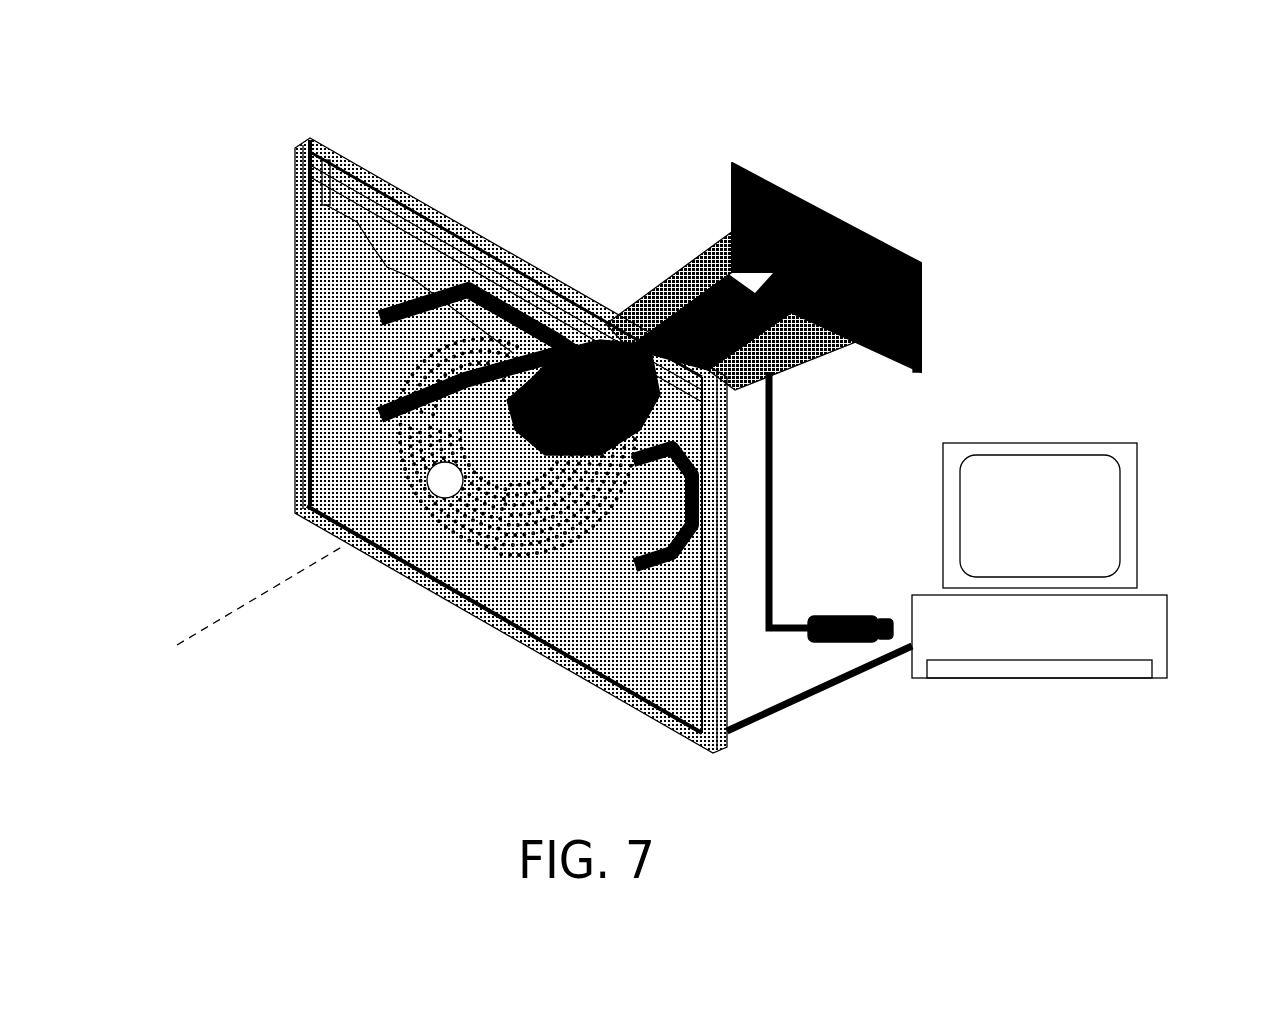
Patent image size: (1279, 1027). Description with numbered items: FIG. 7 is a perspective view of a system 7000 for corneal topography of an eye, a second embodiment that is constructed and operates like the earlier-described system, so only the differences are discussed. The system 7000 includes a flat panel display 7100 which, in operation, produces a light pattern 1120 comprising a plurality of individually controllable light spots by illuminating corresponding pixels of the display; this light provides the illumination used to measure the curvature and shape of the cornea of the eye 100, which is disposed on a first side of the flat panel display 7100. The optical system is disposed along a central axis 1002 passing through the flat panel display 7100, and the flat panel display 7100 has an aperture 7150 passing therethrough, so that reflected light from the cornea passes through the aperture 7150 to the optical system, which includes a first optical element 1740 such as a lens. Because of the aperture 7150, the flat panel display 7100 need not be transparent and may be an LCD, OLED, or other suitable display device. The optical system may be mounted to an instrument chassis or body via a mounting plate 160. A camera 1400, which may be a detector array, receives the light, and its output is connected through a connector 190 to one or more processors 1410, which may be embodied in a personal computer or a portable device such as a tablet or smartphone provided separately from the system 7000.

The system for corneal topography of an eye 7000 is at (1277, 40).
The flat panel display 7100 is at (298, 217).
The light pattern 1120 is at (405, 375).
The eye 100 is at (425, 478).
The central axis 1002 is at (226, 613).
The aperture 7150 is at (495, 450).
The first optical element 1740 is at (547, 463).
The camera 1400 is at (780, 180).
The mounting plate 160 is at (928, 367).
The connector 190 is at (852, 592).
The processor 1410 is at (1105, 410).